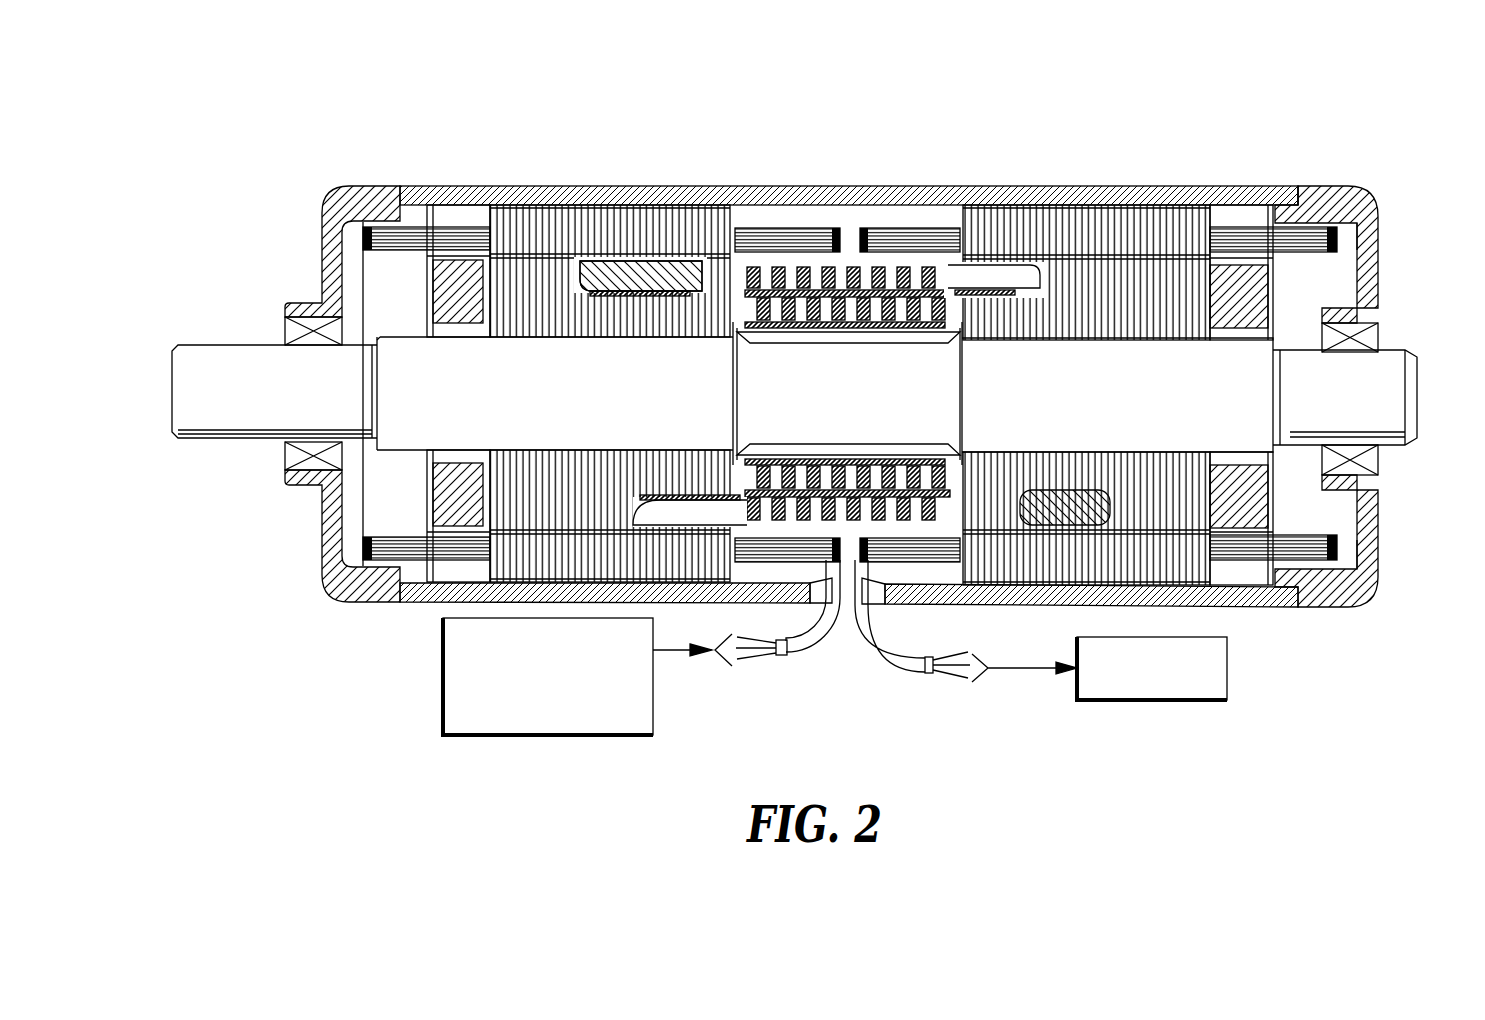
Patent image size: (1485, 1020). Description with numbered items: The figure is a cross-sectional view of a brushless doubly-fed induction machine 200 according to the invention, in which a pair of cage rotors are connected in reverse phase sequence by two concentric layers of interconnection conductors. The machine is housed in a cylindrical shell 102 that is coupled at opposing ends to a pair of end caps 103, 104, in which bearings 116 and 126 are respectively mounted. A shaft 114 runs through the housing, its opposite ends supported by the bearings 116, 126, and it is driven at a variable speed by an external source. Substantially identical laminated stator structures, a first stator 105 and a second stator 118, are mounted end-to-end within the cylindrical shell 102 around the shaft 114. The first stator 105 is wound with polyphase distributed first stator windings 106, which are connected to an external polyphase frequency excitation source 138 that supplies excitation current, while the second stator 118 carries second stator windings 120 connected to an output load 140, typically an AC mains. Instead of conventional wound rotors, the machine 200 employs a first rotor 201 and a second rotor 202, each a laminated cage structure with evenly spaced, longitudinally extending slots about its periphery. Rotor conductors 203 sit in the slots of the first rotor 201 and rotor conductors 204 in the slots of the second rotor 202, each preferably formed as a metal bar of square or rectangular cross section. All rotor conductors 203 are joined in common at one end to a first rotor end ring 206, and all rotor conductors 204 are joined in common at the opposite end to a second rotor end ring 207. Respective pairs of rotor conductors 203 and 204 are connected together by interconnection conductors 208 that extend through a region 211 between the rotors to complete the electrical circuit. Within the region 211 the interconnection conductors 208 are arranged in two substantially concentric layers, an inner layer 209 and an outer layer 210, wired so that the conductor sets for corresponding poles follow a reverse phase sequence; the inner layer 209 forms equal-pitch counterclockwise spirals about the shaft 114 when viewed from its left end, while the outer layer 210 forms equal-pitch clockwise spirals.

The cylindrical shell 102 is at (893, 195).
The end cap 103 is at (363, 188).
The end cap 104 is at (1340, 195).
The first stator 105 is at (675, 212).
The first stator windings 106 is at (363, 227).
The shaft 114 is at (267, 343).
The bearing 116 is at (292, 452).
The second stator 118 is at (1045, 220).
The second stator windings 120 is at (1342, 225).
The bearing 126 is at (1365, 462).
The polyphase frequency excitation source 138 is at (568, 725).
The output load 140 is at (1162, 695).
The brushless doubly-fed induction machine 200 is at (738, 150).
The first rotor 201 is at (550, 270).
The second rotor 202 is at (1130, 277).
The rotor conductors 203 is at (617, 272).
The rotor conductors 204 is at (977, 278).
The first rotor end ring 206 is at (447, 292).
The second rotor end ring 207 is at (1375, 247).
The interconnection conductors 208 is at (845, 525).
The inner layer 209 is at (733, 285).
The outer layer 210 is at (958, 272).
The region 211 is at (820, 345).